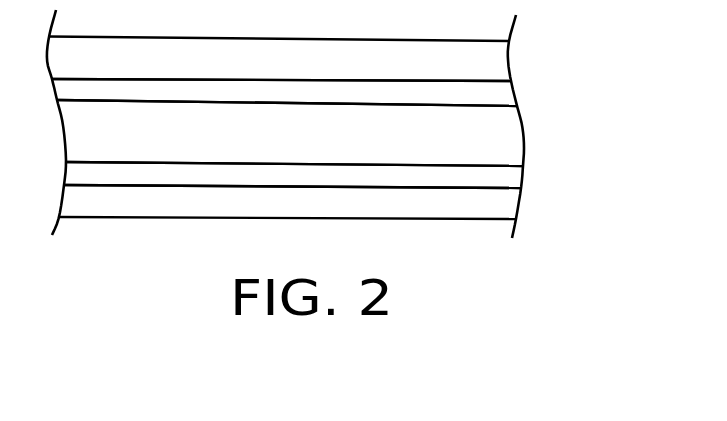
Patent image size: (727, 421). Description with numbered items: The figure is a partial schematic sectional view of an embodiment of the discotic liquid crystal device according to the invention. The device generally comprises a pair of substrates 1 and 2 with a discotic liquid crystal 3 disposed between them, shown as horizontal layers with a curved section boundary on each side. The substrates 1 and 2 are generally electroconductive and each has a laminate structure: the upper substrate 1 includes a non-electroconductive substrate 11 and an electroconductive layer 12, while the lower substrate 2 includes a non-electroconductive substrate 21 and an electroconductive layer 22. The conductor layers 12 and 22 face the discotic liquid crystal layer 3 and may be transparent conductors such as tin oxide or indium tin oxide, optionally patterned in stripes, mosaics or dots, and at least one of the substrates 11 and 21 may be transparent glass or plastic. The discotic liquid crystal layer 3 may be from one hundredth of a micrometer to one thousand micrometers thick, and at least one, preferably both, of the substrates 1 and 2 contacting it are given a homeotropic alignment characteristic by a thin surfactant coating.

The substrate 1 is at (350, 79).
The substrate 11 is at (499, 62).
The electroconductive layer 12 is at (501, 97).
The substrate 2 is at (354, 199).
The substrate 21 is at (511, 208).
The electroconductive layer 22 is at (517, 178).
The discotic liquid crystal 3 is at (514, 134).